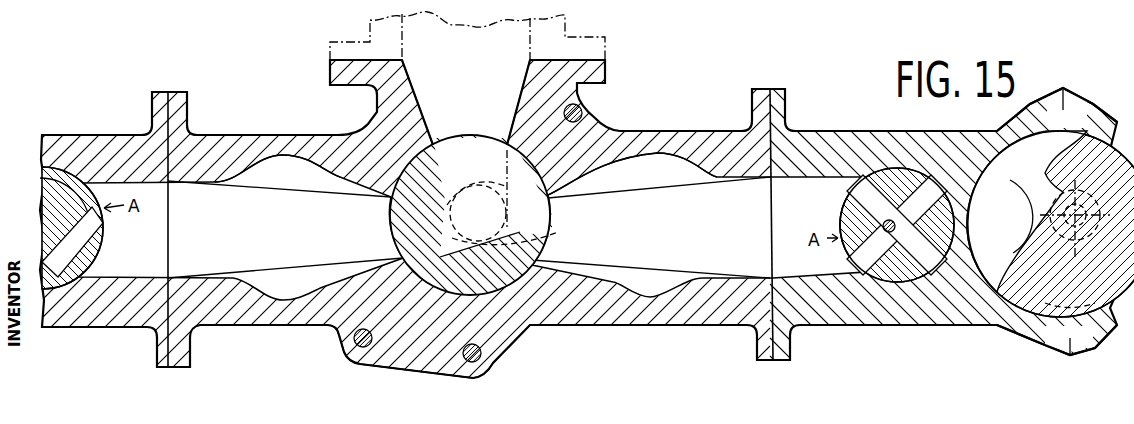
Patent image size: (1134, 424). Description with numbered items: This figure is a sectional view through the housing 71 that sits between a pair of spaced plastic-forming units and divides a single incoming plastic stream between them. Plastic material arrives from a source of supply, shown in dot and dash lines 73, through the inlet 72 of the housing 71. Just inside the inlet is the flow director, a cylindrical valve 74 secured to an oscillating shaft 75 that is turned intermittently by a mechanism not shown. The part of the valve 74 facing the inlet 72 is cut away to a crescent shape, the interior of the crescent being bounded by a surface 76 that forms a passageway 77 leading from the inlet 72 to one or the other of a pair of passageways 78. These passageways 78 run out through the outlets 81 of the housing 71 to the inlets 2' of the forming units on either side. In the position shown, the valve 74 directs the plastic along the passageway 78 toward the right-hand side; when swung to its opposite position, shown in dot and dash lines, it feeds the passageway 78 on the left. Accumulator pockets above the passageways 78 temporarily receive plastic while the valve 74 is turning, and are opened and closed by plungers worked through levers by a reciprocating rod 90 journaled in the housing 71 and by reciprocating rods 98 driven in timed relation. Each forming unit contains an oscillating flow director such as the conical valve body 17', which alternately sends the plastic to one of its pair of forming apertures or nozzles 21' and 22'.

The inlet 2' is at (470, 228).
The outlets of the housing 81 is at (178, 186).
The passageways 78 is at (290, 250).
The cylindrical valve 74 is at (395, 234).
The oscillating shaft 75 is at (540, 233).
The surface 76 is at (425, 170).
The passageway 77 is at (500, 179).
The inlet 72 is at (521, 70).
The source of supply of plastic material 73 is at (452, 18).
The reciprocating rod 98 is at (584, 104).
The reciprocating rod 90 is at (464, 364).
The housing 71 is at (608, 317).
The conical valve body 17' is at (1050, 224).
The forming aperture or nozzle 21' is at (1023, 109).
The forming aperture or nozzle 22' is at (1045, 353).